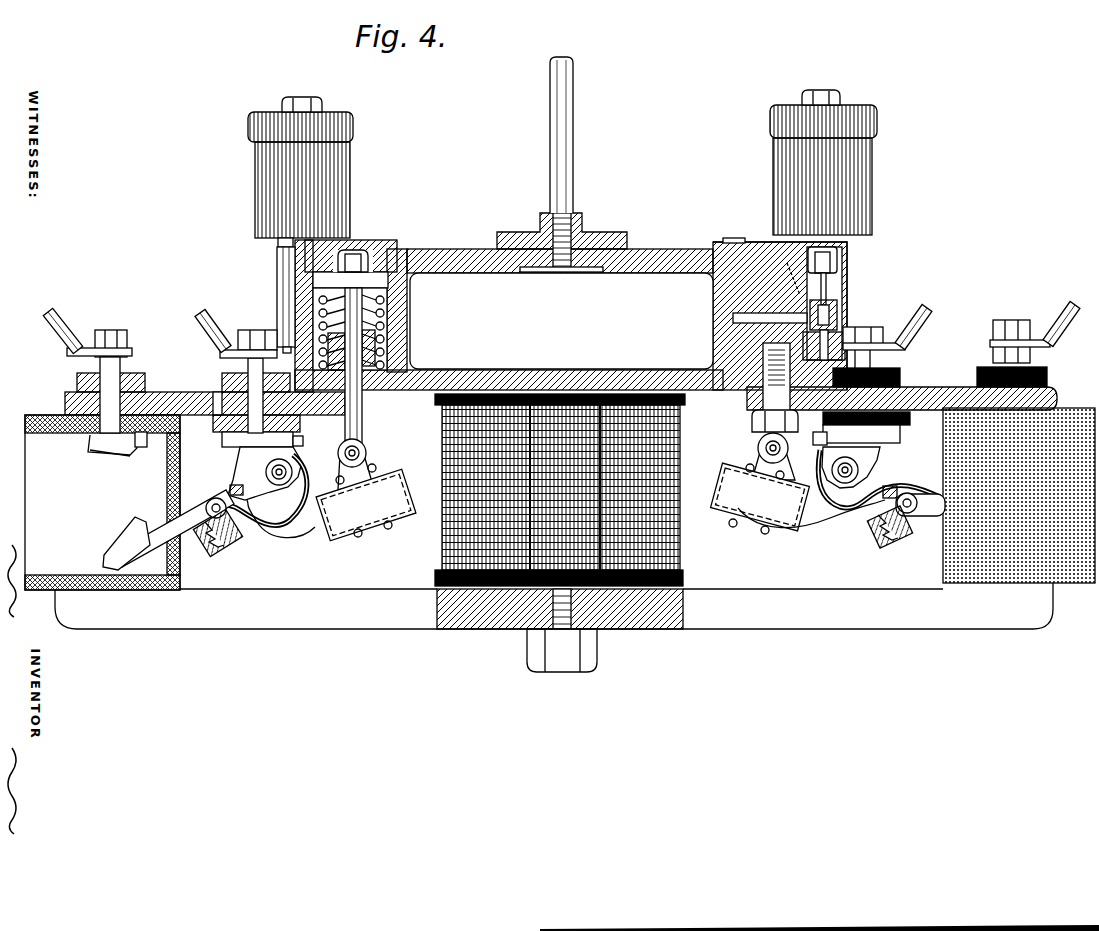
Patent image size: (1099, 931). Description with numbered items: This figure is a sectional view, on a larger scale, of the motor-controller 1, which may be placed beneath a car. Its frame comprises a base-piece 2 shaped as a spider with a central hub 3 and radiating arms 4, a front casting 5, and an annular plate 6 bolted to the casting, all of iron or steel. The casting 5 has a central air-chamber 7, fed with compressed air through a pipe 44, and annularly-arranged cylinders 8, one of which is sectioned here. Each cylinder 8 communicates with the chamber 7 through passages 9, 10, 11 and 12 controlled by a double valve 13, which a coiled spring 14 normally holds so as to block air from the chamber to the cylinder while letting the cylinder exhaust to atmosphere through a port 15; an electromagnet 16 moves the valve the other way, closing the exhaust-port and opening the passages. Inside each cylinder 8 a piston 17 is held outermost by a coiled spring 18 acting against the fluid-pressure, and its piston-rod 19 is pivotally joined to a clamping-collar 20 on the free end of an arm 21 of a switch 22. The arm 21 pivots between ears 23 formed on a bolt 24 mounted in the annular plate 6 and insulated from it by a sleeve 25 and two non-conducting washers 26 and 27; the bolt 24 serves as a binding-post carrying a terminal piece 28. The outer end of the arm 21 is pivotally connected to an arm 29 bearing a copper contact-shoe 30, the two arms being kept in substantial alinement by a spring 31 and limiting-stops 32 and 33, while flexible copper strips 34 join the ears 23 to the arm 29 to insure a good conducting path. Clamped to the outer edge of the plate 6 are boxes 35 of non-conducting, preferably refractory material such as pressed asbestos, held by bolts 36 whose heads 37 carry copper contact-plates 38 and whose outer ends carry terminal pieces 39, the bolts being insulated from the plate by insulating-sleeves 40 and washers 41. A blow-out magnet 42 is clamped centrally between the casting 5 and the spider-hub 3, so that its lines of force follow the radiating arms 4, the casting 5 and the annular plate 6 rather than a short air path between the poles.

The motor-controller 1 is at (818, 292).
The base-piece 2 is at (503, 650).
The central hub 3 is at (638, 628).
The radiating arms 4 is at (554, 606).
The front casting 5 is at (735, 390).
The annular plate 6 is at (172, 400).
The central air-chamber 7 is at (561, 321).
The cylinder 8 is at (389, 300).
The passage 9 is at (733, 318).
The passage 10 is at (838, 300).
The passage 11 is at (827, 275).
The passage 12 is at (300, 273).
The double valve 13 is at (820, 285).
The coiled spring 14 is at (846, 318).
The exhaust-port 15 is at (838, 262).
The electromagnet 16 is at (350, 170).
The piston 17 is at (390, 282).
The coiled spring 18 is at (389, 318).
The piston-rod 19 is at (363, 407).
The clamping-collar 20 is at (380, 483).
The arm 21 is at (312, 530).
The switch 22 is at (560, 473).
The ears 23 is at (285, 455).
The bolt 24 is at (222, 351).
The sleeve 25 is at (214, 414).
The washer 26 is at (301, 424).
The washer 27 is at (224, 383).
The terminal piece 28 is at (570, 329).
The arm 29 is at (922, 512).
The contact-shoe 30 is at (126, 541).
The spring 31 is at (228, 546).
The limiting-stop 32 is at (551, 537).
The limiting-stop 33 is at (238, 485).
The flexible copper strips 34 is at (303, 494).
The box 35 is at (36, 448).
The bolt 36 is at (108, 410).
The head 37 is at (90, 438).
The contact-plate 38 is at (125, 456).
The terminal piece 39 is at (557, 333).
The insulating-sleeve 40 is at (145, 440).
The washer 41 is at (140, 373).
The blow-out magnet 42 is at (442, 543).
The pipe 44 is at (550, 143).